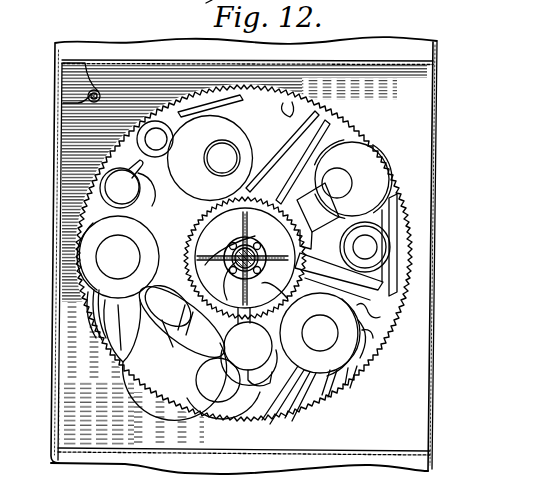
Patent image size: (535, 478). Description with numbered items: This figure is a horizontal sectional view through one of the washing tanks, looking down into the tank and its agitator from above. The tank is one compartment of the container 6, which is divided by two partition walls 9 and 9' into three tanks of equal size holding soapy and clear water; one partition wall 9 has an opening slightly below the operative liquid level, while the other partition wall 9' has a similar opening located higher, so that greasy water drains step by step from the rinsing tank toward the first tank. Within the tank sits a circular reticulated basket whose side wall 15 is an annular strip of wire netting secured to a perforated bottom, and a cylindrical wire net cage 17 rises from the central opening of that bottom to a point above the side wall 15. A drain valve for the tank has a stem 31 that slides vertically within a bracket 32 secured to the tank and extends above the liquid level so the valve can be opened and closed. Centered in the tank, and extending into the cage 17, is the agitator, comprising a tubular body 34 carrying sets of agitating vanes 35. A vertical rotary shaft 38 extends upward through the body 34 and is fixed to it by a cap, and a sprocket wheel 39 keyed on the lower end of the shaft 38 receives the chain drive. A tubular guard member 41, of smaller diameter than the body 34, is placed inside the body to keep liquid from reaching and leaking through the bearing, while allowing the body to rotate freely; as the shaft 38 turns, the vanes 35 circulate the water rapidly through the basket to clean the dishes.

The container 6 is at (435, 129).
The partition wall 9 is at (272, 64).
The partition wall 9' is at (255, 443).
The side wall 15 is at (412, 228).
The cylindrical wire net cage 17 is at (205, 242).
The valve stem 31 is at (92, 100).
The bracket 32 is at (70, 78).
The tubular body 34 is at (292, 303).
The agitating vanes 35 is at (246, 308).
The vertical rotary shaft 38 is at (230, 250).
The sprocket wheel 39 is at (206, 3).
The tubular guard member 41 is at (272, 240).